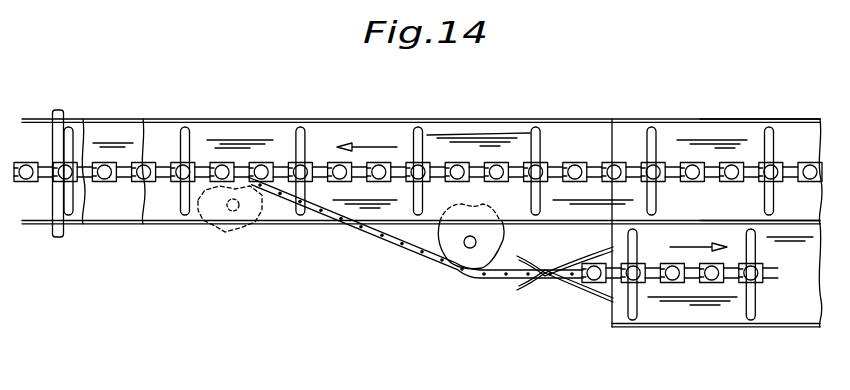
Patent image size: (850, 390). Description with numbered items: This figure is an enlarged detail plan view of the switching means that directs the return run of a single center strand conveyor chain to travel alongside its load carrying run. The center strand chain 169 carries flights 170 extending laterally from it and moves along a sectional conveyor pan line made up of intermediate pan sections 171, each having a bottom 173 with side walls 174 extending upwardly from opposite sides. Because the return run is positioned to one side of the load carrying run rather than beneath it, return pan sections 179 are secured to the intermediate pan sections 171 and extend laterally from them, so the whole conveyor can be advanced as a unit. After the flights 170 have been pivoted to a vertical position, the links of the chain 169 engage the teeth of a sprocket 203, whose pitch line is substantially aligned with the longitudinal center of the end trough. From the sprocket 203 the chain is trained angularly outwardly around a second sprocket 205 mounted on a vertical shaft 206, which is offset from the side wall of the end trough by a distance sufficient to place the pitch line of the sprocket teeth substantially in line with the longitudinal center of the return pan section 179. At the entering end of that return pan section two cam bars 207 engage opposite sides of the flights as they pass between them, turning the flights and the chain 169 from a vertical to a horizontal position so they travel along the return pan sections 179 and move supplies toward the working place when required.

The center strand chain 169 is at (163, 163).
The flights 170 is at (427, 136).
The intermediate pan sections 171 is at (688, 120).
The bottom 173 is at (727, 128).
The side walls 174 is at (815, 100).
The return pan sections 179 is at (748, 327).
The sprocket 203 is at (218, 228).
The sprocket 205 is at (428, 257).
The vertical shaft 206 is at (470, 246).
The cam bars 207 is at (593, 255).